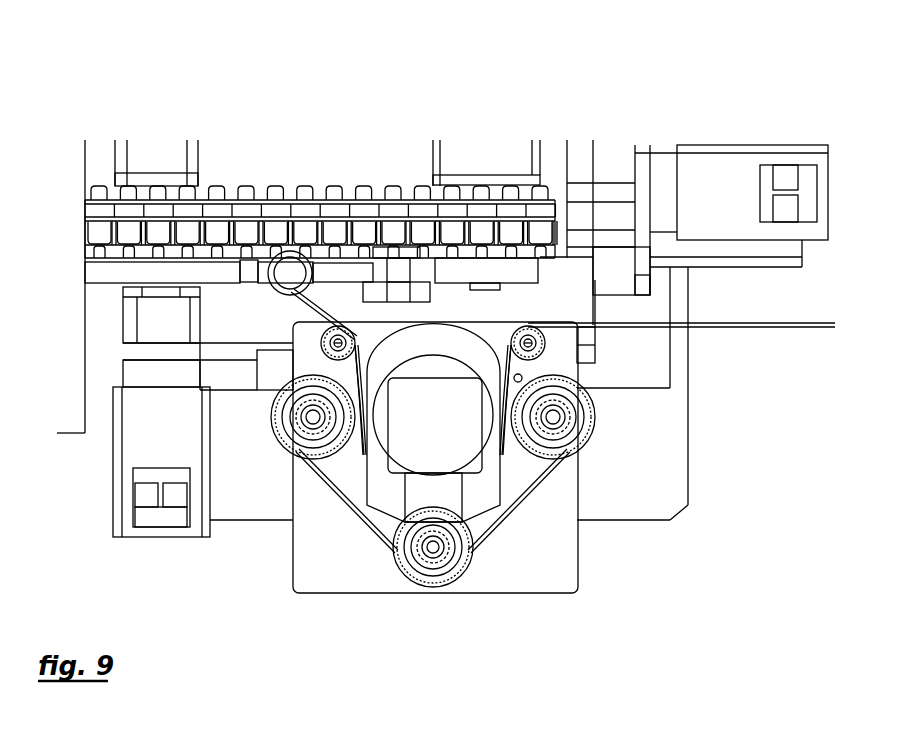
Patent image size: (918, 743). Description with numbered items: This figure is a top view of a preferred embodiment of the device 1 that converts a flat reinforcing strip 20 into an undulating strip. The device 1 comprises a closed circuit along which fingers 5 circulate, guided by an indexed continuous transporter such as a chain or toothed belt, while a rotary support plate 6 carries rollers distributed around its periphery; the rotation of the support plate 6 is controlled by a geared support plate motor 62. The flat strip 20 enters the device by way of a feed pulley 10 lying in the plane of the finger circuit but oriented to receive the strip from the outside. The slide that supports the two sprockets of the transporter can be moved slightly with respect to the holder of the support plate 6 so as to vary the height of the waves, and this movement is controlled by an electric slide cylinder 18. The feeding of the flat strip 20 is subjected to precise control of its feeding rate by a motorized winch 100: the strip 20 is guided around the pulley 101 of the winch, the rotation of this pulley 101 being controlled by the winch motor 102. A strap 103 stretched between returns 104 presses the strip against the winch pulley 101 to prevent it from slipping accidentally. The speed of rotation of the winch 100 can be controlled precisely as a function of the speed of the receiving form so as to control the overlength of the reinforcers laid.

The device 1 is at (630, 108).
The fingers 5 is at (513, 250).
The rotary support plate 6 is at (153, 272).
The feed pulley 10 is at (283, 275).
The electric slide cylinder 18 is at (817, 165).
The flat reinforcing strip 20 is at (322, 312).
The geared support plate motor 62 is at (143, 438).
The motorized winch 100 is at (513, 598).
The pulley 101 is at (503, 447).
The winch motor 102 is at (455, 433).
The strap 103 is at (317, 475).
The returns 104 is at (555, 460).